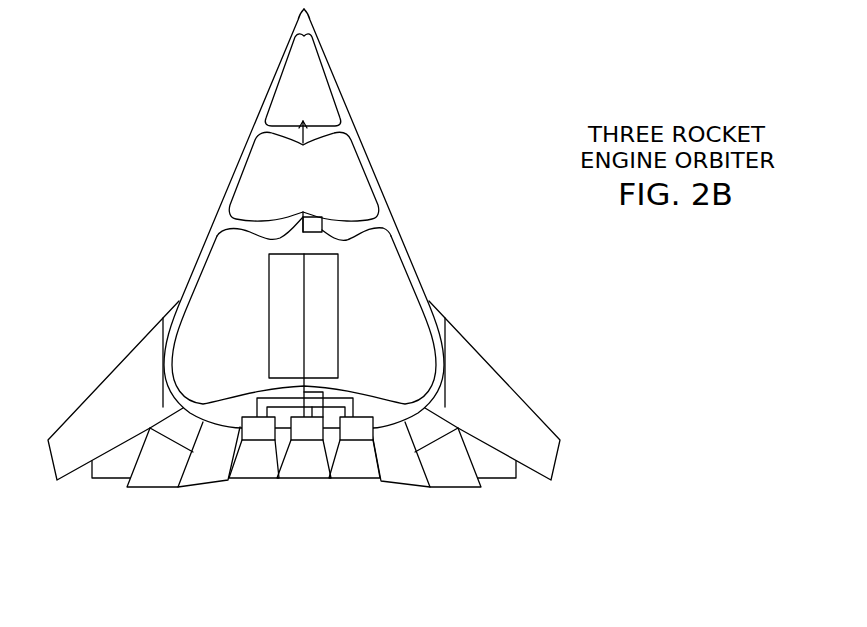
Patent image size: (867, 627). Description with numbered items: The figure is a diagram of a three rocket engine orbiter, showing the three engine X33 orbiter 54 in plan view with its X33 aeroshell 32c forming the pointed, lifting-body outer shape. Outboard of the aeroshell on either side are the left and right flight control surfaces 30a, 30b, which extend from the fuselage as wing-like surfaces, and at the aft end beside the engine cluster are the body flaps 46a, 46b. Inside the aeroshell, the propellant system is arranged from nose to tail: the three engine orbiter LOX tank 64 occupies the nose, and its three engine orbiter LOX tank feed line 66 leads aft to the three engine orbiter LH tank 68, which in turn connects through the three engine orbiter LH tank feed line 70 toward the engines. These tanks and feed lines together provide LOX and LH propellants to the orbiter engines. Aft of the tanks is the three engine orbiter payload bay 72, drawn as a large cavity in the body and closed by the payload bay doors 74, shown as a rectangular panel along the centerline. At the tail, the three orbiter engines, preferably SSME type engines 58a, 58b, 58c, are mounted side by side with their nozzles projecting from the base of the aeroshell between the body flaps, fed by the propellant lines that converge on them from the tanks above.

The flight control surface 30a is at (103, 381).
The flight control surface 30b is at (505, 381).
The X33 aeroshell 32c is at (377, 186).
The body flap 46a is at (193, 486).
The body flap 46b is at (415, 485).
The three engine X33 orbiter 54 is at (224, 197).
The SSME type engine 58a is at (248, 486).
The SSME type engine 58b is at (300, 486).
The SSME type engine 58c is at (343, 486).
The three engine orbiter LOX tank 64 is at (317, 46).
The three engine orbiter LOX tank feed line 66 is at (303, 122).
The three engine orbiter LH tank 68 is at (368, 173).
The three engine orbiter LH tank feed line 70 is at (322, 227).
The three engine orbiter payload bay 72 is at (404, 274).
The payload bay doors 74 is at (338, 316).